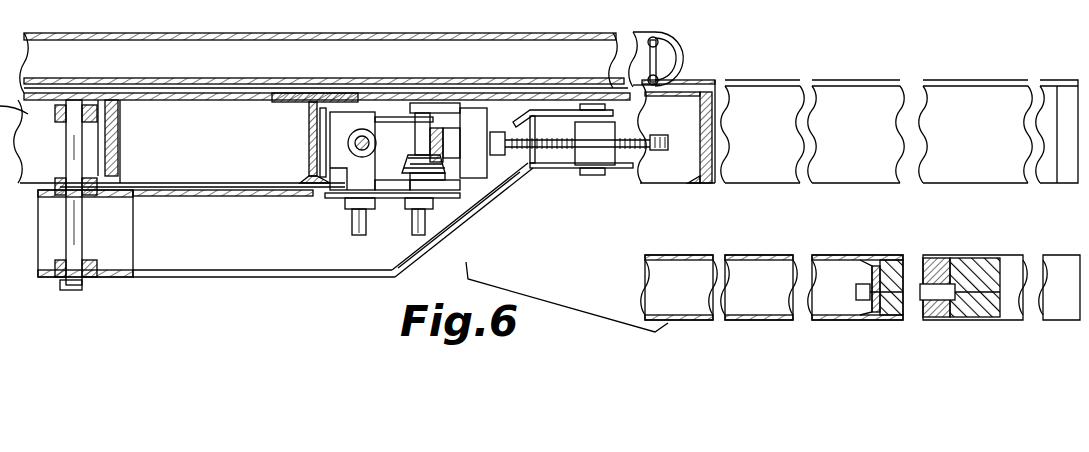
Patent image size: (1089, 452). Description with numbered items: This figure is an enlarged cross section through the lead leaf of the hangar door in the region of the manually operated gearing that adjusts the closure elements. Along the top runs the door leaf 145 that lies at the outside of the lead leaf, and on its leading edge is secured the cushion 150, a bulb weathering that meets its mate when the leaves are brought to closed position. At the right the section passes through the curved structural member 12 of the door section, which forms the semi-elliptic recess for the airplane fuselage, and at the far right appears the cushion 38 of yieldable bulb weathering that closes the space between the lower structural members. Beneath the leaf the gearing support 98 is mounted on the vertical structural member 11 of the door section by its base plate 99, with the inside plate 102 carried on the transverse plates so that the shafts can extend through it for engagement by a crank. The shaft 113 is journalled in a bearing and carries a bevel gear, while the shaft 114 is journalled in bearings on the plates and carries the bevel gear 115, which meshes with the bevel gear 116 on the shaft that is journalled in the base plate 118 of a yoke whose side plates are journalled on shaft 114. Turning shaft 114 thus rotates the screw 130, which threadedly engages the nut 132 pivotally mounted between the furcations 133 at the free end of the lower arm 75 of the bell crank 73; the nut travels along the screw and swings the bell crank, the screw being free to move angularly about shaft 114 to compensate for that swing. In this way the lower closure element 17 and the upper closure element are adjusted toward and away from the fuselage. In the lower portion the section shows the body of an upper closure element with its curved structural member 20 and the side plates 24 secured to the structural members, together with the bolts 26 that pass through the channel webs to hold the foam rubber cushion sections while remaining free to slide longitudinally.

The door leaf 145 is at (486, 48).
The cushion 150 is at (682, 53).
The furcation 133 is at (546, 110).
The cushion 38 is at (1069, 100).
The bevel gear 116 is at (442, 134).
The vertical structural member 11 is at (310, 121).
The screw 130 is at (662, 135).
The bevel gear 115 is at (409, 160).
The base plate 99 is at (322, 150).
The base plate of yoke 118 is at (476, 165).
The curved structural member 12 is at (700, 146).
The nut 132 is at (580, 168).
The lower arm of bell crank 75 is at (490, 200).
The gearing support 98 is at (332, 212).
The inside plate 102 is at (450, 200).
The shaft 113 is at (387, 232).
The shaft 114 is at (460, 238).
The bell crank lever 73 is at (305, 280).
The lower closure element 17 is at (683, 304).
The side plate 24 is at (770, 258).
The curved structural member 20 is at (862, 303).
The bolt 26 is at (925, 292).